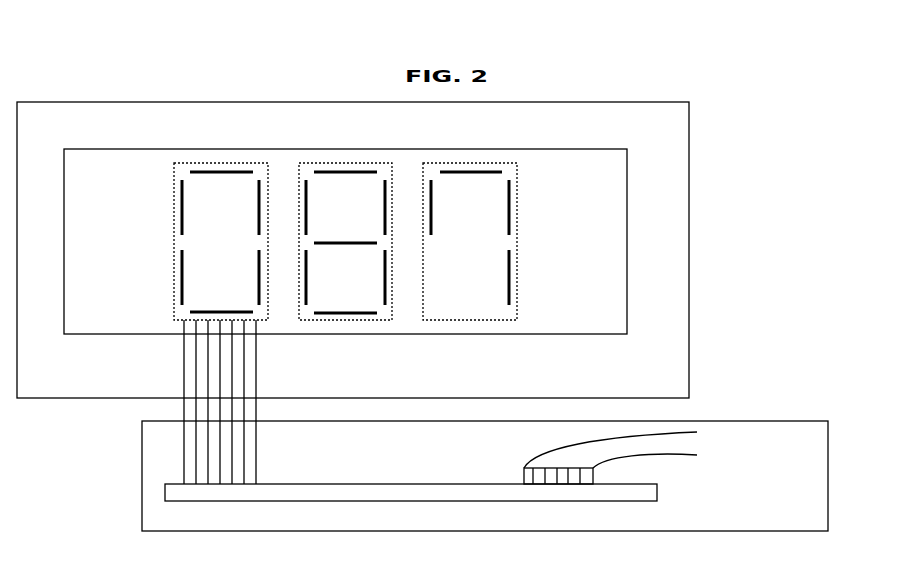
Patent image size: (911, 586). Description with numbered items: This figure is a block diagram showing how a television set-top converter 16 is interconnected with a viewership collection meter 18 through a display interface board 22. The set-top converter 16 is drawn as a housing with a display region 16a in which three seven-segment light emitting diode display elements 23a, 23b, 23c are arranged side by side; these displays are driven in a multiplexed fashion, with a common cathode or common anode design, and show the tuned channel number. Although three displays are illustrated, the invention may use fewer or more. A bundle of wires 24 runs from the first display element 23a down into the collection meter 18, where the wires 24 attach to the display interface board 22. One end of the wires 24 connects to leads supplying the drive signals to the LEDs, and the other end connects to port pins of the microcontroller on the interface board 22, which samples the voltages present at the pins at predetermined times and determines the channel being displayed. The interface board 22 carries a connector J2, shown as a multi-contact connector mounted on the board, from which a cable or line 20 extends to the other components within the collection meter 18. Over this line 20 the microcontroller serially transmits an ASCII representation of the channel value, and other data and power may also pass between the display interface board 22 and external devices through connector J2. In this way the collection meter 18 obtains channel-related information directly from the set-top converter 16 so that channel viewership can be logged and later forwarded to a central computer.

The set-top converter 16 is at (692, 170).
The display window 16a is at (630, 222).
The seven-segment LED display element 23a is at (171, 219).
The seven-segment LED display element 23b is at (336, 160).
The seven-segment LED display element 23c is at (520, 211).
The wires 24 is at (259, 477).
The viewership collection meter 18 is at (781, 422).
The display interface board 22 is at (398, 504).
The connector J2 is at (600, 481).
The line 20 is at (682, 443).